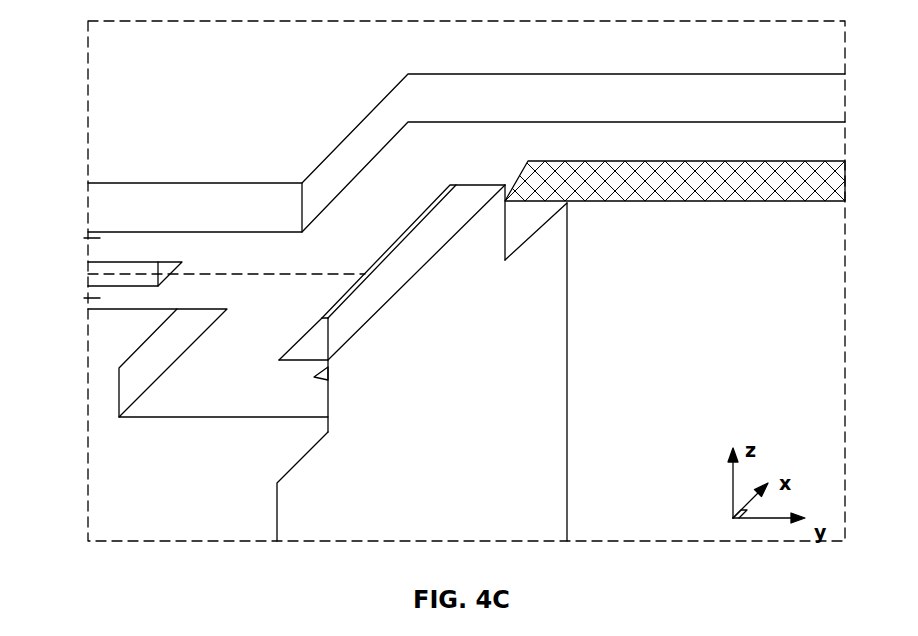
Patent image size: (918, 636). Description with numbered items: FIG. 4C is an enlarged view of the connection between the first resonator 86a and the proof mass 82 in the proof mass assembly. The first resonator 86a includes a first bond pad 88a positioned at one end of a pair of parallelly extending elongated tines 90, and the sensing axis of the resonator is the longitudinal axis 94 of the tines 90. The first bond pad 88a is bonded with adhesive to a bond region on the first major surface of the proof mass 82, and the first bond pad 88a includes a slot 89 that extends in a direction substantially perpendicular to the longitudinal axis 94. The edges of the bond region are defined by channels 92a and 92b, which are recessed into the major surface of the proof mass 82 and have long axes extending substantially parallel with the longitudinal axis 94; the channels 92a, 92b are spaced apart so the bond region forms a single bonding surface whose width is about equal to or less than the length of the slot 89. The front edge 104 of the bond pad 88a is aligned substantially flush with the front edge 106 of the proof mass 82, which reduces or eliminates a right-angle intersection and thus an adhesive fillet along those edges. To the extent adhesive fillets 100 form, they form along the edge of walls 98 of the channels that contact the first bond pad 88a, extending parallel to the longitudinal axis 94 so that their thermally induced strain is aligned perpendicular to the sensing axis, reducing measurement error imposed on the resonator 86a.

The proof mass 82 is at (671, 344).
The first resonator 86a is at (180, 194).
The first bond pad 88a is at (678, 156).
The slot 89 is at (334, 348).
The tines 90 is at (103, 238).
The channel 92a is at (500, 222).
The channel 92b is at (274, 445).
The longitudinal axis 94 is at (240, 276).
The walls 98 is at (535, 232).
The adhesive fillets 100 is at (598, 183).
The front edge of bond pad 104 is at (396, 252).
The front edge of proof mass 106 is at (400, 317).